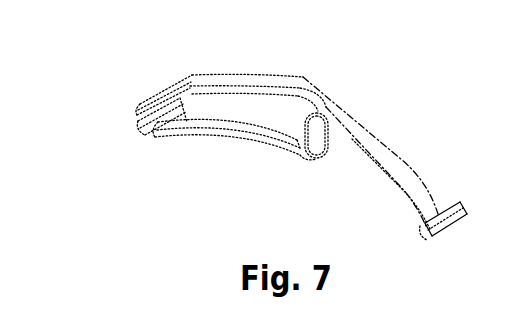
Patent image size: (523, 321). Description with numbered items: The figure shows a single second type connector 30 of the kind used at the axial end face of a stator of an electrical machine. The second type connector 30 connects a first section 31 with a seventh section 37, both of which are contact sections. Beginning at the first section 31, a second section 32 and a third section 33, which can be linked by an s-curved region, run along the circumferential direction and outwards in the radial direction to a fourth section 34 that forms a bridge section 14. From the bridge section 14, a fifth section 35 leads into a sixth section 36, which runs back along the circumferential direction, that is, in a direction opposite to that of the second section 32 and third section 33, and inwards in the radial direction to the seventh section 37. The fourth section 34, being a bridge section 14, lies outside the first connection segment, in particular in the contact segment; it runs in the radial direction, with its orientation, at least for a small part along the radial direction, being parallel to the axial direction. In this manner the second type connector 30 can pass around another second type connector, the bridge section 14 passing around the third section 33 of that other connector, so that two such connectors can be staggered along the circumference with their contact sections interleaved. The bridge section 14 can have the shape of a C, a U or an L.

The second type connector 30 is at (155, 61).
The third section 33 is at (243, 78).
The bridge section 14 is at (119, 119).
The fourth section 34 is at (150, 111).
The fifth section 35 is at (155, 115).
The sixth section 36 is at (212, 136).
The seventh section 37 is at (313, 150).
The second section 32 is at (393, 151).
The first section 31 is at (453, 228).